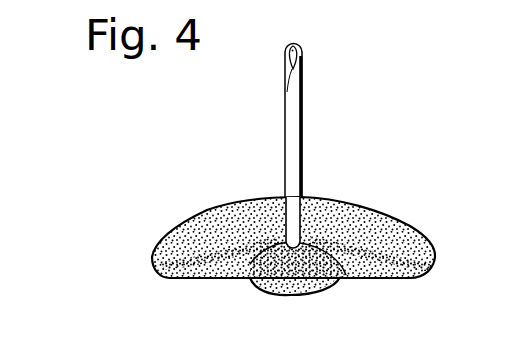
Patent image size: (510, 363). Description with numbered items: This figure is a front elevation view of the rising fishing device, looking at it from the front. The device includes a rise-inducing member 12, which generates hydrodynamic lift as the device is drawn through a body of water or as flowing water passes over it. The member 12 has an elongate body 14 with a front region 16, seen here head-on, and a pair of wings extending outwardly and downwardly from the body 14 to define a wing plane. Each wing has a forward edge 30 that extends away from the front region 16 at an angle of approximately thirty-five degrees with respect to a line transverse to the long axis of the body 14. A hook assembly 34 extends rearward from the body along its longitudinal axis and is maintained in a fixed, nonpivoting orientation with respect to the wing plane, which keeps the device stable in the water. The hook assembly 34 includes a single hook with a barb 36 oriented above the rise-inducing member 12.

The rise-inducing member 12 is at (168, 223).
The elongate body 14 is at (290, 297).
The front region 16 is at (305, 193).
The forward edge 30 is at (237, 216).
The hook assembly 34 is at (302, 108).
The barb 36 is at (288, 81).